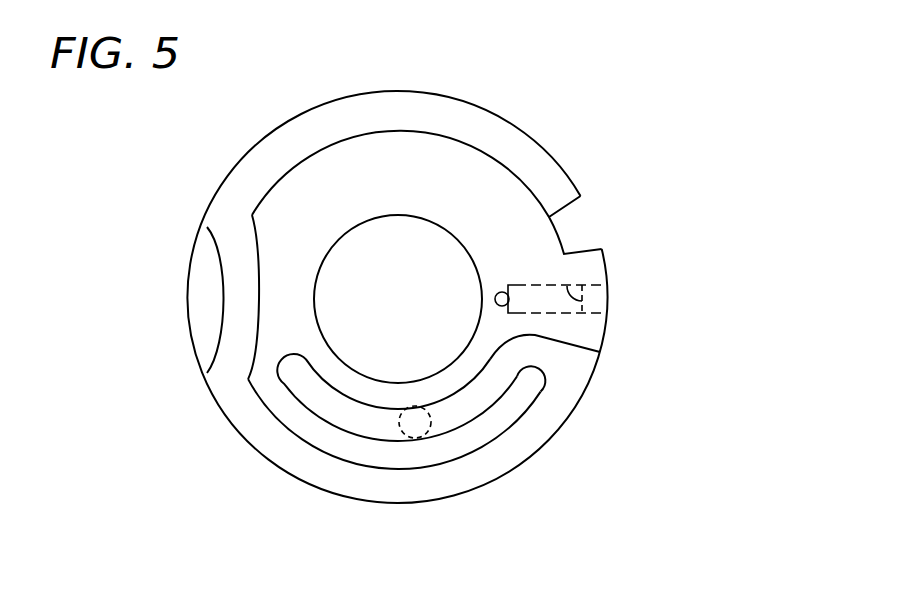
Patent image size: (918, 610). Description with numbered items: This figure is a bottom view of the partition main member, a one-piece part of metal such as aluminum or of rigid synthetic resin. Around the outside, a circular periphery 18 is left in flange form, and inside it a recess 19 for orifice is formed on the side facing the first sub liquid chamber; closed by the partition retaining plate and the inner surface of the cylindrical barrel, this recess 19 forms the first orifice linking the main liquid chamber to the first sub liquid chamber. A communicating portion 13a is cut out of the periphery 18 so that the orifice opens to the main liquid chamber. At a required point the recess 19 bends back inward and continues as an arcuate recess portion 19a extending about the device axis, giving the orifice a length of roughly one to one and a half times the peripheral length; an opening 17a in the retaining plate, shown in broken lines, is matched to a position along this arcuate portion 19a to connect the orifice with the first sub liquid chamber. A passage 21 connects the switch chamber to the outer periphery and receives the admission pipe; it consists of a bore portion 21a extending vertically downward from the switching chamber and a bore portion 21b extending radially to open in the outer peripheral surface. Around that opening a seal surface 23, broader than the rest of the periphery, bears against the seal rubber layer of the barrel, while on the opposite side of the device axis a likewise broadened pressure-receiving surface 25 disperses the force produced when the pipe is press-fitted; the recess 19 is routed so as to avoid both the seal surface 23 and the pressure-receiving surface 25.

The communicating portion 13a is at (568, 212).
The opening 17a is at (418, 433).
The circular periphery 18 is at (533, 145).
The recess for orifice 19 is at (232, 378).
The bent-back arcuate recess portion 19a is at (362, 428).
The passage 21 is at (628, 275).
The bore portion 21a is at (508, 299).
The bore portion 21b is at (583, 299).
The seal surface 23 is at (607, 335).
The pressure-receiving surface 25 is at (190, 302).